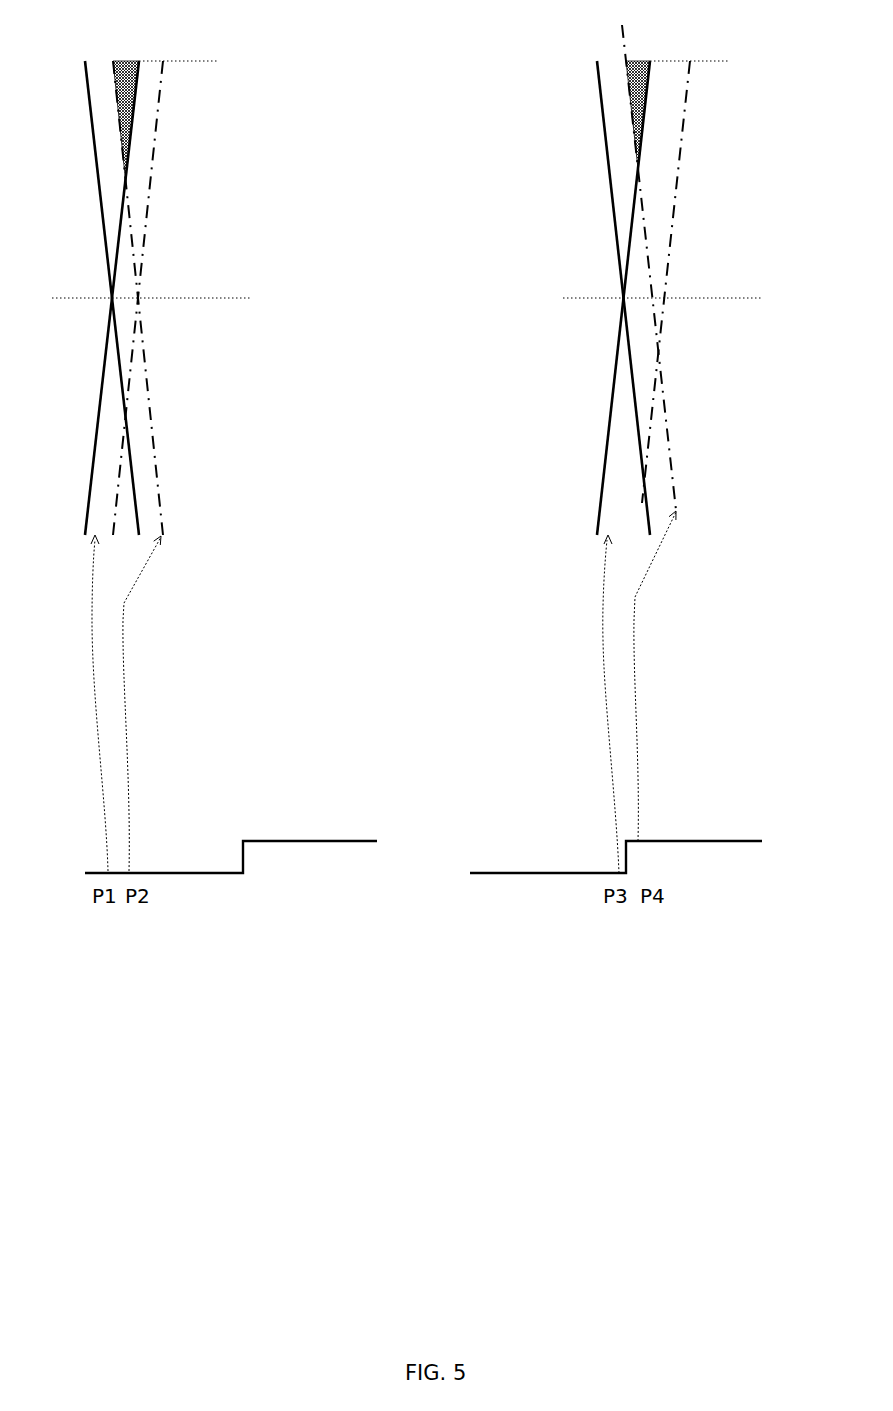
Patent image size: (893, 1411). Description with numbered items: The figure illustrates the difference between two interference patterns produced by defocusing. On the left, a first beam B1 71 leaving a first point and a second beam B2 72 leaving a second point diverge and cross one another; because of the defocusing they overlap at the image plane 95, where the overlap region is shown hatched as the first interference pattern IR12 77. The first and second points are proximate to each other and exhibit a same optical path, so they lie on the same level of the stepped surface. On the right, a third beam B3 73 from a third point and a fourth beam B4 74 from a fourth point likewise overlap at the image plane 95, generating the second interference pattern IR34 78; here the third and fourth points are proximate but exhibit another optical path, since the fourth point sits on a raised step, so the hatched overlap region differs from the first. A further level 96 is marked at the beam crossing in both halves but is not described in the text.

The first beam B1 71 is at (87, 492).
The second beam B2 72 is at (125, 405).
The third beam B3 73 is at (599, 492).
The fourth beam B4 74 is at (660, 376).
The first interference pattern IR12 77 is at (132, 40).
The second interference pattern IR34 78 is at (627, 62).
The image plane 95 is at (447, 61).
The beam crossing plane 96 is at (421, 299).